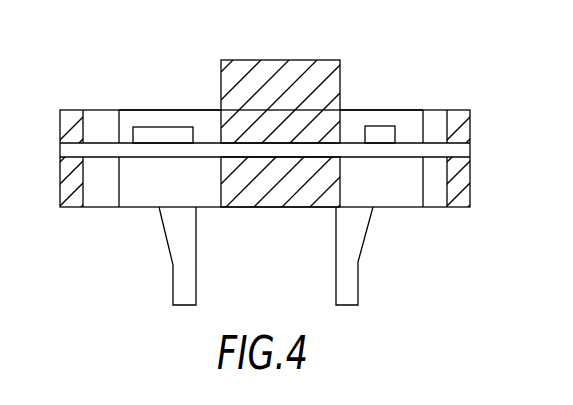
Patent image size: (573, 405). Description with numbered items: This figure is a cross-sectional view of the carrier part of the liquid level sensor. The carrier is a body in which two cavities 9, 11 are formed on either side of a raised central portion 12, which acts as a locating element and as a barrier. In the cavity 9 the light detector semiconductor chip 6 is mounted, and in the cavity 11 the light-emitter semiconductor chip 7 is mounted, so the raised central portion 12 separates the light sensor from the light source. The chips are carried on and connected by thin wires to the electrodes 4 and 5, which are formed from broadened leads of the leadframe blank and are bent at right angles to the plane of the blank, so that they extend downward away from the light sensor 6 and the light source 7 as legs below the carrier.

The electrode 4 is at (352, 279).
The electrode 5 is at (185, 278).
The light detector semiconductor chip 6 is at (142, 127).
The light-emitter semiconductor chip 7 is at (383, 125).
The cavity 9 is at (167, 113).
The cavity 11 is at (357, 120).
The raised central portion 12 is at (282, 60).